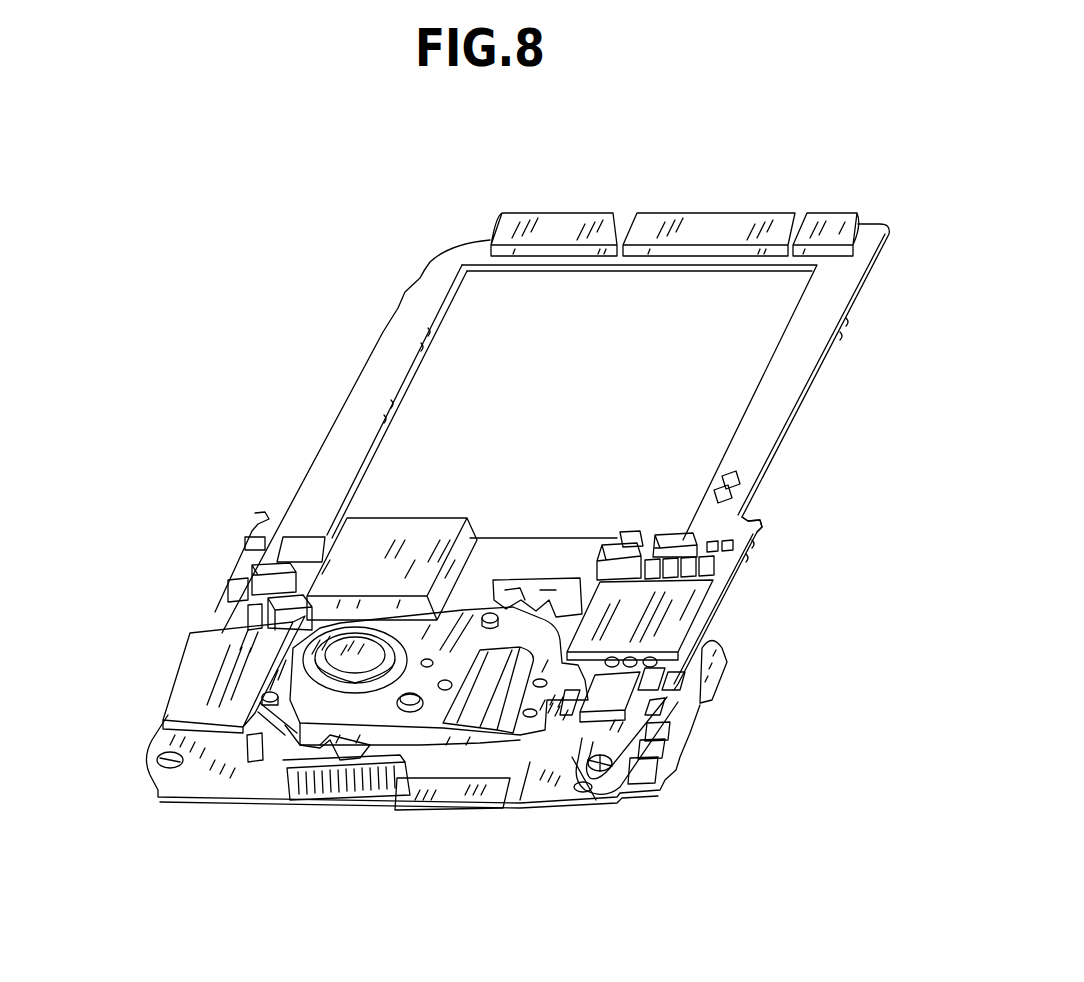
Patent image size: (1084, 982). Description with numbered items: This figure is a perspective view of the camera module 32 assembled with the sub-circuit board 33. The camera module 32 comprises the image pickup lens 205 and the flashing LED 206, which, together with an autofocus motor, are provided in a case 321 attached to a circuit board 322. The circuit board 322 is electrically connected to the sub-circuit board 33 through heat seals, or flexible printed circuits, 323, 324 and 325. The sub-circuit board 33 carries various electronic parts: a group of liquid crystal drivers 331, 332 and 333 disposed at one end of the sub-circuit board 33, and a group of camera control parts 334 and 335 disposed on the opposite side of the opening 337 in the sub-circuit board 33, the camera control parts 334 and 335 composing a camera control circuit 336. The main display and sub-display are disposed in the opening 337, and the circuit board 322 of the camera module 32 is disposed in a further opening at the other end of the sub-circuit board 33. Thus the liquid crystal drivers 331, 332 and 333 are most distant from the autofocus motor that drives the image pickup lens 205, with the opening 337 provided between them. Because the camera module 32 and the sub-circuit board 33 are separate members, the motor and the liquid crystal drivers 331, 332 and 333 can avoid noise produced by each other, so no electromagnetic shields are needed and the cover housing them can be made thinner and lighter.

The camera module 32 is at (362, 818).
The sub-circuit board 33 is at (792, 353).
The image pickup lens 205 is at (352, 638).
The flashing LED 206 is at (492, 602).
The case 321 is at (293, 793).
The circuit board 322 is at (538, 787).
The heat seal 323 is at (172, 668).
The heat seal 324 is at (445, 793).
The heat seal 325 is at (722, 690).
The liquid crystal driver 331 is at (573, 225).
The liquid crystal driver 332 is at (713, 225).
The liquid crystal driver 333 is at (836, 225).
The camera control part 334 is at (385, 548).
The camera control part 335 is at (668, 612).
The camera control circuit 336 is at (772, 520).
The opening 337 is at (526, 357).